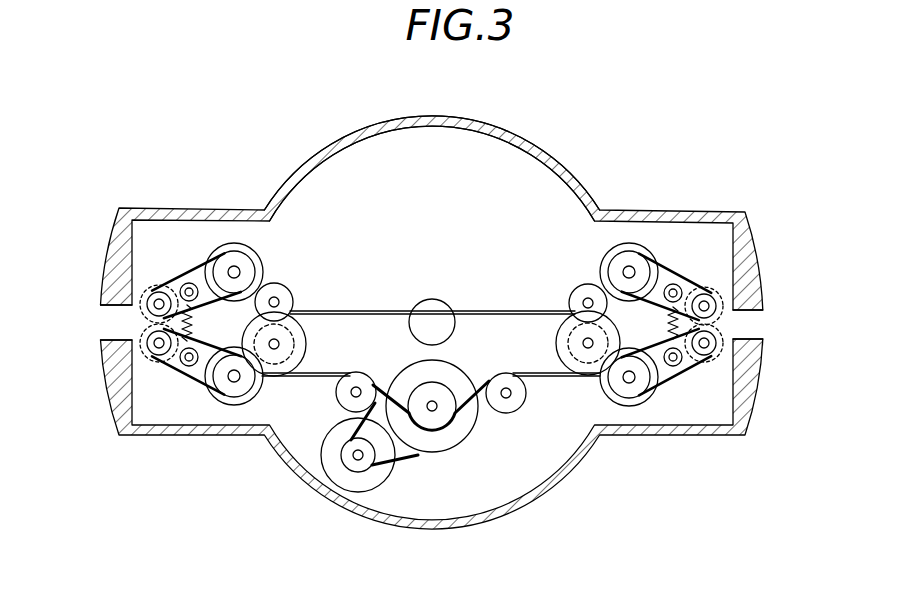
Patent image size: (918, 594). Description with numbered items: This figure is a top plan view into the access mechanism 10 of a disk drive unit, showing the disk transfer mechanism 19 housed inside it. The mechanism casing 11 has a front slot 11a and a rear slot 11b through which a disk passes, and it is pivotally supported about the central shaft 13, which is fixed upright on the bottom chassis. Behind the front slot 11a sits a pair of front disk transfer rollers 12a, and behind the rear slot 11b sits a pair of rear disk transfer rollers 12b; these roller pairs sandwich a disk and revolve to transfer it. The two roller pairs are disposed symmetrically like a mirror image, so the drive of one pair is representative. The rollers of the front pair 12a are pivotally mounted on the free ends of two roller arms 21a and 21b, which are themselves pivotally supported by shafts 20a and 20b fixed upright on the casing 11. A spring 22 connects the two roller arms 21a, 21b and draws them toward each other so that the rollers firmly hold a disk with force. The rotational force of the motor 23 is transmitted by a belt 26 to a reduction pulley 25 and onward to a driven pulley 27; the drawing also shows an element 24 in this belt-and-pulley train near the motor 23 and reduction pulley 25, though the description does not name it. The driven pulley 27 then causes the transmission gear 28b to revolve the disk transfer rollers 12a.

The access mechanism 10 is at (587, 158).
The mechanism casing 11 is at (543, 150).
The front slot 11a is at (764, 321).
The rear slot 11b is at (115, 321).
The front disk transfer rollers 12a is at (710, 282).
The rear disk transfer rollers 12b is at (168, 272).
The central shaft 13 is at (434, 300).
The disk transfer mechanism 19 is at (370, 287).
The shaft 20a is at (629, 272).
The shaft 20b is at (628, 380).
The roller arm 21a is at (668, 280).
The roller arm 21b is at (663, 383).
The spring 22 is at (570, 293).
The motor 23 is at (383, 483).
The drive belt 24 is at (417, 457).
The reduction pulley 25 is at (453, 438).
The belt 26 is at (543, 382).
The driven pulley 27 is at (556, 342).
The transmission gear 28b is at (640, 397).